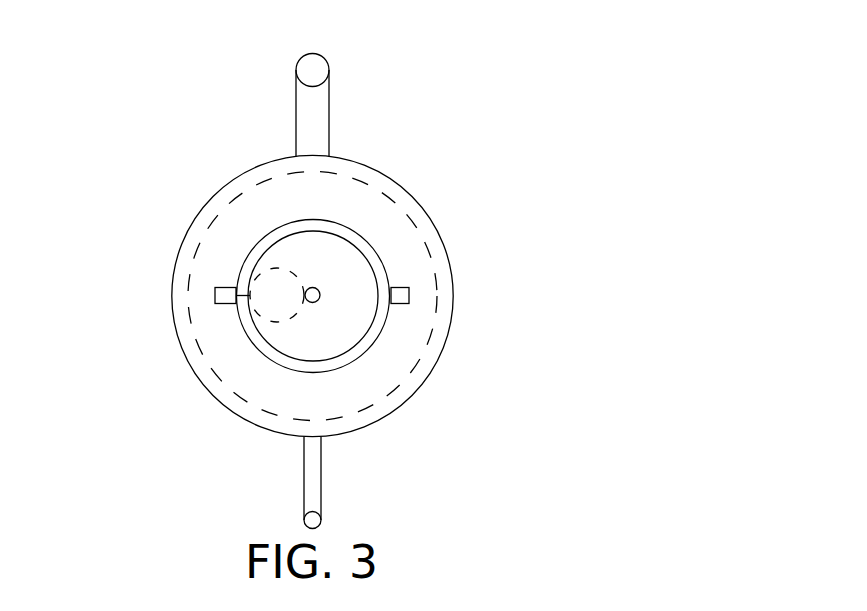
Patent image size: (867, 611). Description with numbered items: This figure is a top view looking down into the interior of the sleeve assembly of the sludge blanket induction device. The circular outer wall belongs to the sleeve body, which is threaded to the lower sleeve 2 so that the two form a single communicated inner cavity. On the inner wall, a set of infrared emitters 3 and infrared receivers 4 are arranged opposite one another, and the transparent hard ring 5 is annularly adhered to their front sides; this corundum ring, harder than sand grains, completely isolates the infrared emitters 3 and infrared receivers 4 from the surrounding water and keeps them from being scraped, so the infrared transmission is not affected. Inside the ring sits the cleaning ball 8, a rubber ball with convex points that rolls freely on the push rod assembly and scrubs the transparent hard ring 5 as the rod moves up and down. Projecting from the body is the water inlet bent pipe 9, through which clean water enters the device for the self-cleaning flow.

The lower sleeve 2 is at (384, 295).
The infrared emitters 3 is at (151, 259).
The infrared receivers 4 is at (494, 236).
The transparent hard ring 5 is at (221, 296).
The cleaning ball 8 is at (186, 238).
The water inlet bent pipe 9 is at (439, 78).